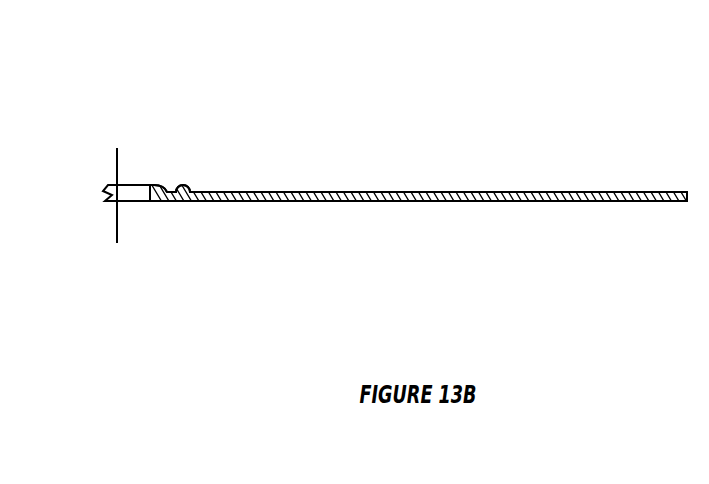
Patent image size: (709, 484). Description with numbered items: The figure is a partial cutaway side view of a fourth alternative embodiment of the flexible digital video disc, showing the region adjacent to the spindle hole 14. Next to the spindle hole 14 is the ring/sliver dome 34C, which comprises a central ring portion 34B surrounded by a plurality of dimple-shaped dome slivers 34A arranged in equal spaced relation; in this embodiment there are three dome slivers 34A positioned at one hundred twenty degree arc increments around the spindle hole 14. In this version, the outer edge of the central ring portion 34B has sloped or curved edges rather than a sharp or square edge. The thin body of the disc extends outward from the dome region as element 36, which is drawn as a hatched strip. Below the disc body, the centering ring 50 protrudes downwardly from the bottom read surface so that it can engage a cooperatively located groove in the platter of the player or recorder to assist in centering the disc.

The spindle hole 14 is at (139, 167).
The dimple-shaped dome slivers 34A is at (186, 185).
The central ring portion 34B is at (158, 168).
The ring/sliver dome 34C is at (240, 160).
The film / strip 36 is at (509, 192).
The centering ring 50 is at (205, 210).